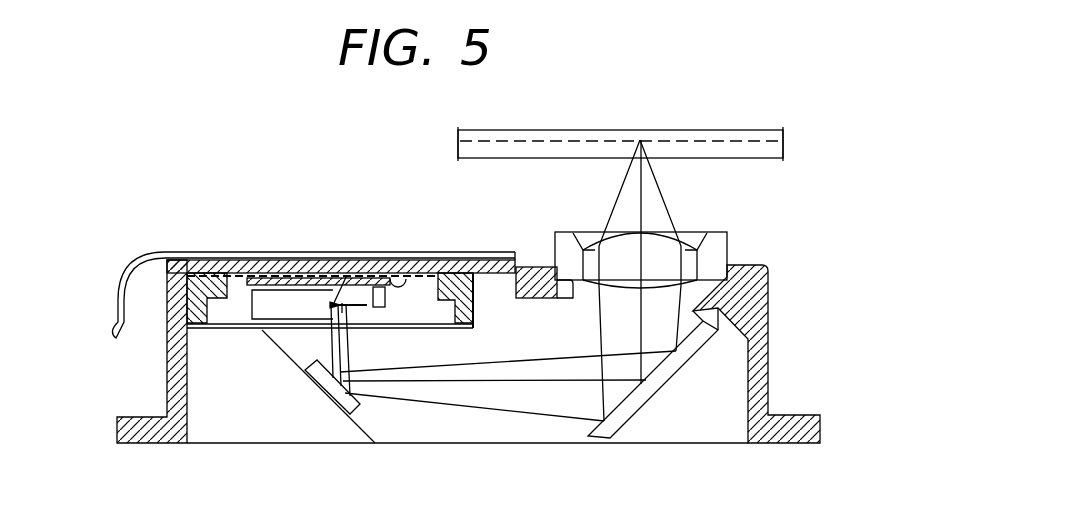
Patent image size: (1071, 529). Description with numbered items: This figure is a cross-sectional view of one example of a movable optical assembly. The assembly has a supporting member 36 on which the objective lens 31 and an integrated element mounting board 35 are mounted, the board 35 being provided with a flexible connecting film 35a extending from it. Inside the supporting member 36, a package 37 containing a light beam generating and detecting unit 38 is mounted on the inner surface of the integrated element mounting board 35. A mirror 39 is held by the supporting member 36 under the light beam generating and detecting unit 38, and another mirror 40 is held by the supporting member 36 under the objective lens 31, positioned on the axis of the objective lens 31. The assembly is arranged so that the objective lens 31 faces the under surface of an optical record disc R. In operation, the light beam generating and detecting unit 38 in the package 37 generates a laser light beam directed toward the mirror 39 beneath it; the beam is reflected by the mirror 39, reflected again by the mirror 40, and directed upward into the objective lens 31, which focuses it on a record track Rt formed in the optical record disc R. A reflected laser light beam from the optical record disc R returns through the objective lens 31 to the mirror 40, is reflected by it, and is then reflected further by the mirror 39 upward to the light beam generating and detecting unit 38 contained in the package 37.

The objective lens 31 is at (712, 243).
The integrated element mounting board 35 is at (261, 261).
The flexible connecting film 35a is at (197, 256).
The supporting member 36 is at (760, 353).
The package 37 is at (224, 330).
The light beam generating and detecting unit 38 is at (407, 274).
The mirror 39 is at (330, 401).
The mirror 40 is at (640, 402).
The optical record disc R is at (636, 130).
The record track Rt is at (737, 140).